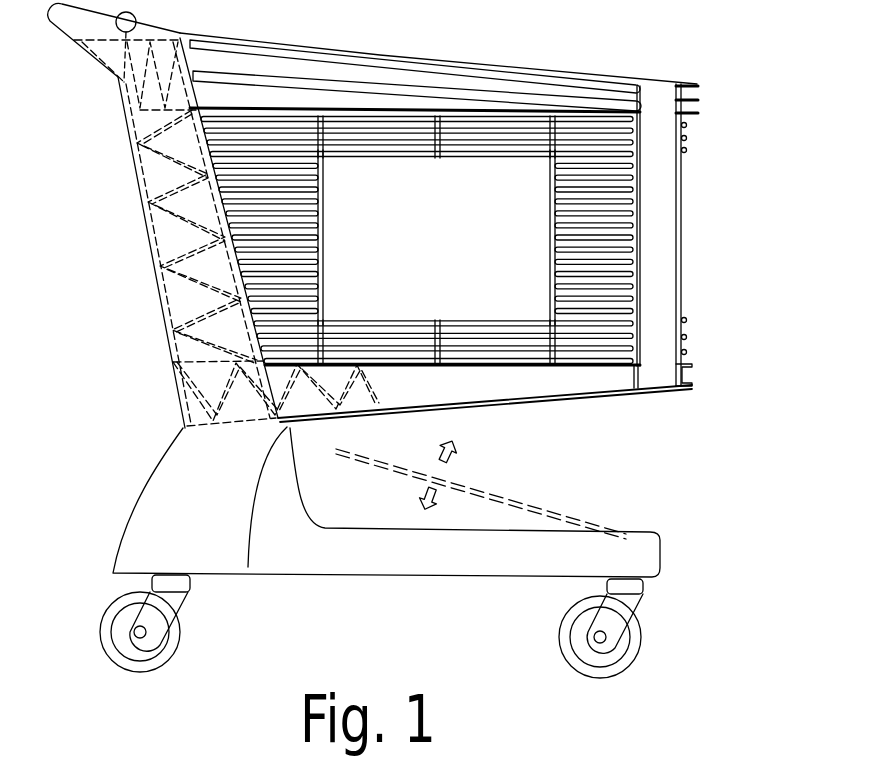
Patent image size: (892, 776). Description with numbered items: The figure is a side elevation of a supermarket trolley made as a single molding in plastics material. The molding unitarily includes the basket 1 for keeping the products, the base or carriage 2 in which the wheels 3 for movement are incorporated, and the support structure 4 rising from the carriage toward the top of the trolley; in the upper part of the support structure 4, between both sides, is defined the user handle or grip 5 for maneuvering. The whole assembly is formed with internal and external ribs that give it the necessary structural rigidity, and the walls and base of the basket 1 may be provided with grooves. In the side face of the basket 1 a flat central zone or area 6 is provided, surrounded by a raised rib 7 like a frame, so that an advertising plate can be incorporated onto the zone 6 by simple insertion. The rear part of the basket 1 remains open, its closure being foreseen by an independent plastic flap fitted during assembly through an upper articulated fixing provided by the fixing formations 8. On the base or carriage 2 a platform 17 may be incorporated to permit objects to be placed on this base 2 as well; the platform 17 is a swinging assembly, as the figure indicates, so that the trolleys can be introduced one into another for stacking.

The basket 1 is at (602, 237).
The base or carriage 2 is at (597, 552).
The wheels 3 is at (115, 653).
The support structure 4 is at (162, 265).
The user handle or grip 5 is at (63, 17).
The flat central zones or areas 6 is at (518, 195).
The raised rib 7 is at (553, 298).
The fixing formations 8 is at (125, 28).
The platform 17 is at (508, 500).